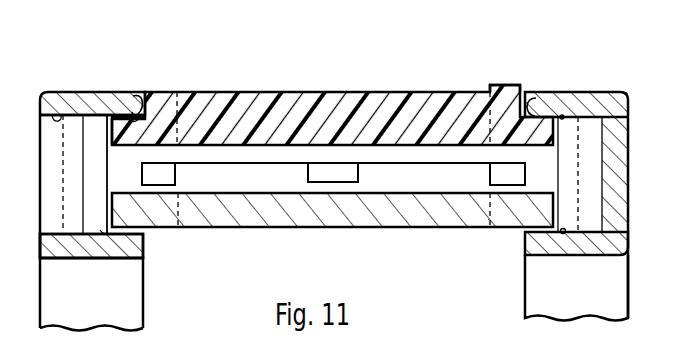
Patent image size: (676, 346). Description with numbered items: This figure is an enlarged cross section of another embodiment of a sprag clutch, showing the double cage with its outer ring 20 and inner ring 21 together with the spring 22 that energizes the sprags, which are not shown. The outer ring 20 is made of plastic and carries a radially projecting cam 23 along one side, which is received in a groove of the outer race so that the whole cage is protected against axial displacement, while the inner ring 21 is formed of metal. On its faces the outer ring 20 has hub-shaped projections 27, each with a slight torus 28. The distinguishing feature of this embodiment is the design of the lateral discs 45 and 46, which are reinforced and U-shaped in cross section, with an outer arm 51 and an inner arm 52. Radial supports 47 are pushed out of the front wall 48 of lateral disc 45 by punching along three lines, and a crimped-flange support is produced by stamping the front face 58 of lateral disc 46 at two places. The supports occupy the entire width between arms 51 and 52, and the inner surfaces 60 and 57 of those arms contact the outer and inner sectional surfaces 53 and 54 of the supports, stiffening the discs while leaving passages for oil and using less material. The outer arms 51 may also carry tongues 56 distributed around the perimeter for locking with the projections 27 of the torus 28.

The outer cage ring 20 is at (305, 102).
The inner cage ring 21 is at (397, 217).
The spring 22 is at (243, 164).
The radially projecting cam 23 is at (505, 88).
The hub-shaped projection 27 is at (148, 128).
The torus 28 is at (135, 97).
The lateral disc 45 is at (44, 107).
The lateral disc 46 is at (613, 102).
The radial support 47 is at (95, 130).
The front wall 48 is at (50, 248).
The outer arm 51 is at (110, 98).
The inner arm 52 is at (88, 250).
The outer sectional surface 53 is at (561, 115).
The inner sectional surface 54 is at (562, 232).
The tongue 56 is at (133, 120).
The inner surface 57 is at (57, 117).
The front face 58 is at (617, 240).
The inner surface 60 is at (102, 233).